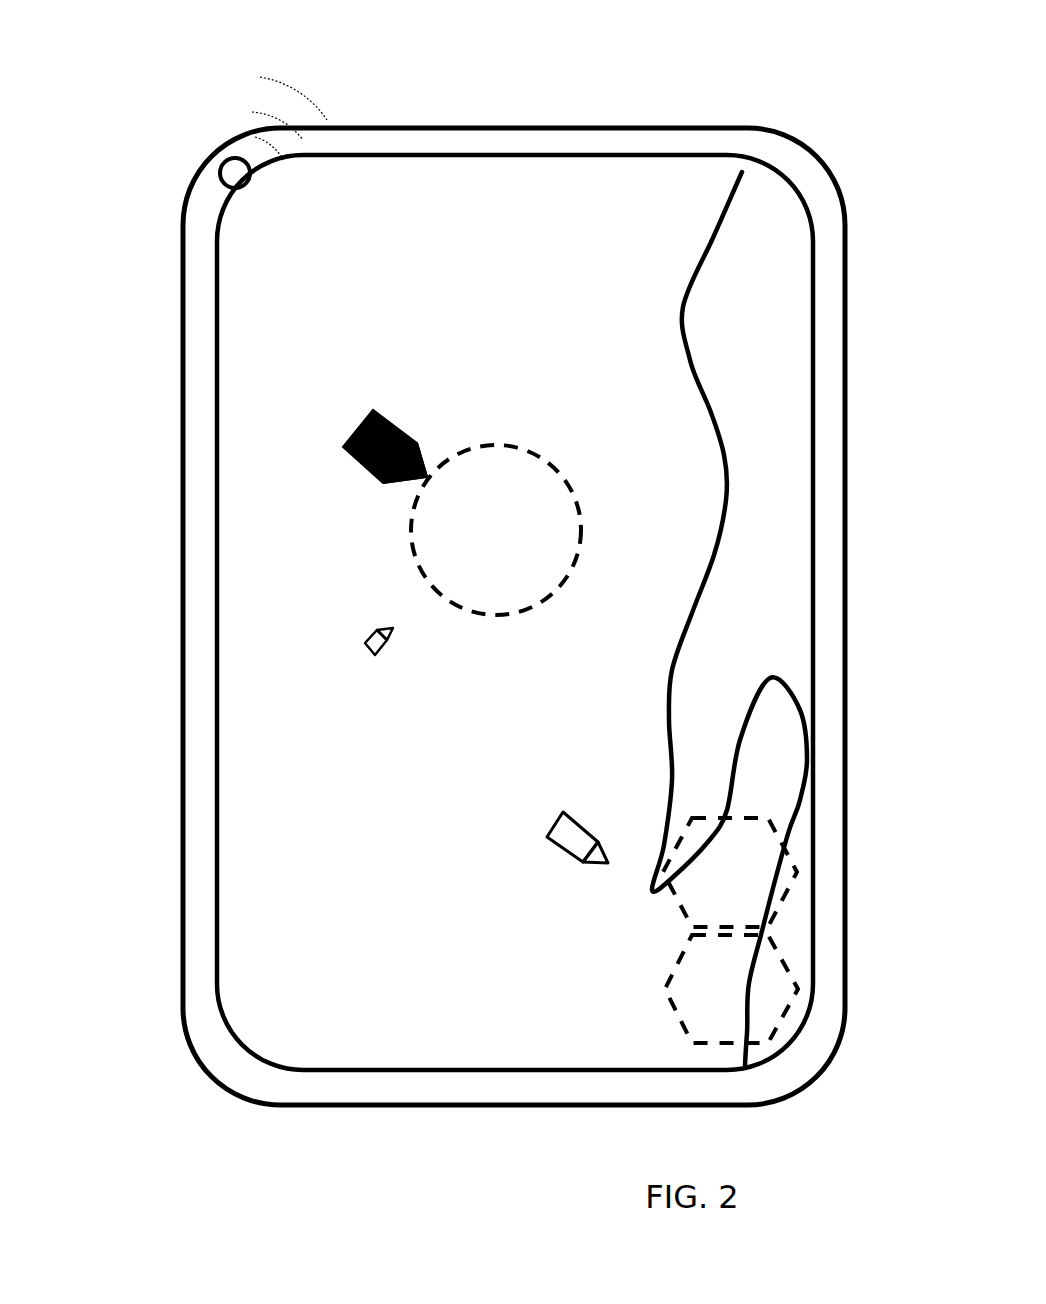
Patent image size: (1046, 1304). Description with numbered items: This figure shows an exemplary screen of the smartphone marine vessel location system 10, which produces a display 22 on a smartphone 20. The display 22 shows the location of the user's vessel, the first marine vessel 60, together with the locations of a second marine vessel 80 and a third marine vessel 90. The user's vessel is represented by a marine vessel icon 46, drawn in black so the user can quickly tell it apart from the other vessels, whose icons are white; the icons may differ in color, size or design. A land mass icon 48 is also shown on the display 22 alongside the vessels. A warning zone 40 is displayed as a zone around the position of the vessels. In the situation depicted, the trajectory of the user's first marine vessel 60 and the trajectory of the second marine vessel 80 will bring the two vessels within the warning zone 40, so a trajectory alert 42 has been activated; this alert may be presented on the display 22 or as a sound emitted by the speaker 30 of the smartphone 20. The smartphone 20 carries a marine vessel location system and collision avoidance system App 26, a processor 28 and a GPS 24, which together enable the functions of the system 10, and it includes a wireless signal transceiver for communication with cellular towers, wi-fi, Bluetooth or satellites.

The smartphone marine vessel location system 10 is at (136, 107).
The smartphone 20 is at (692, 140).
The display 22 is at (785, 305).
The GPS 24 is at (768, 873).
The marine vessel location system and collision avoidance system App 26 is at (770, 907).
The processor 28 is at (767, 985).
The speaker 30 is at (233, 172).
The warning zone 40 is at (565, 488).
The trajectory alert 42 is at (552, 253).
The marine vessel icon 46 is at (352, 427).
The land mass icon 48 is at (782, 435).
The first marine vessel 60 is at (402, 430).
The second marine vessel 80 is at (388, 653).
The third marine vessel 90 is at (562, 833).